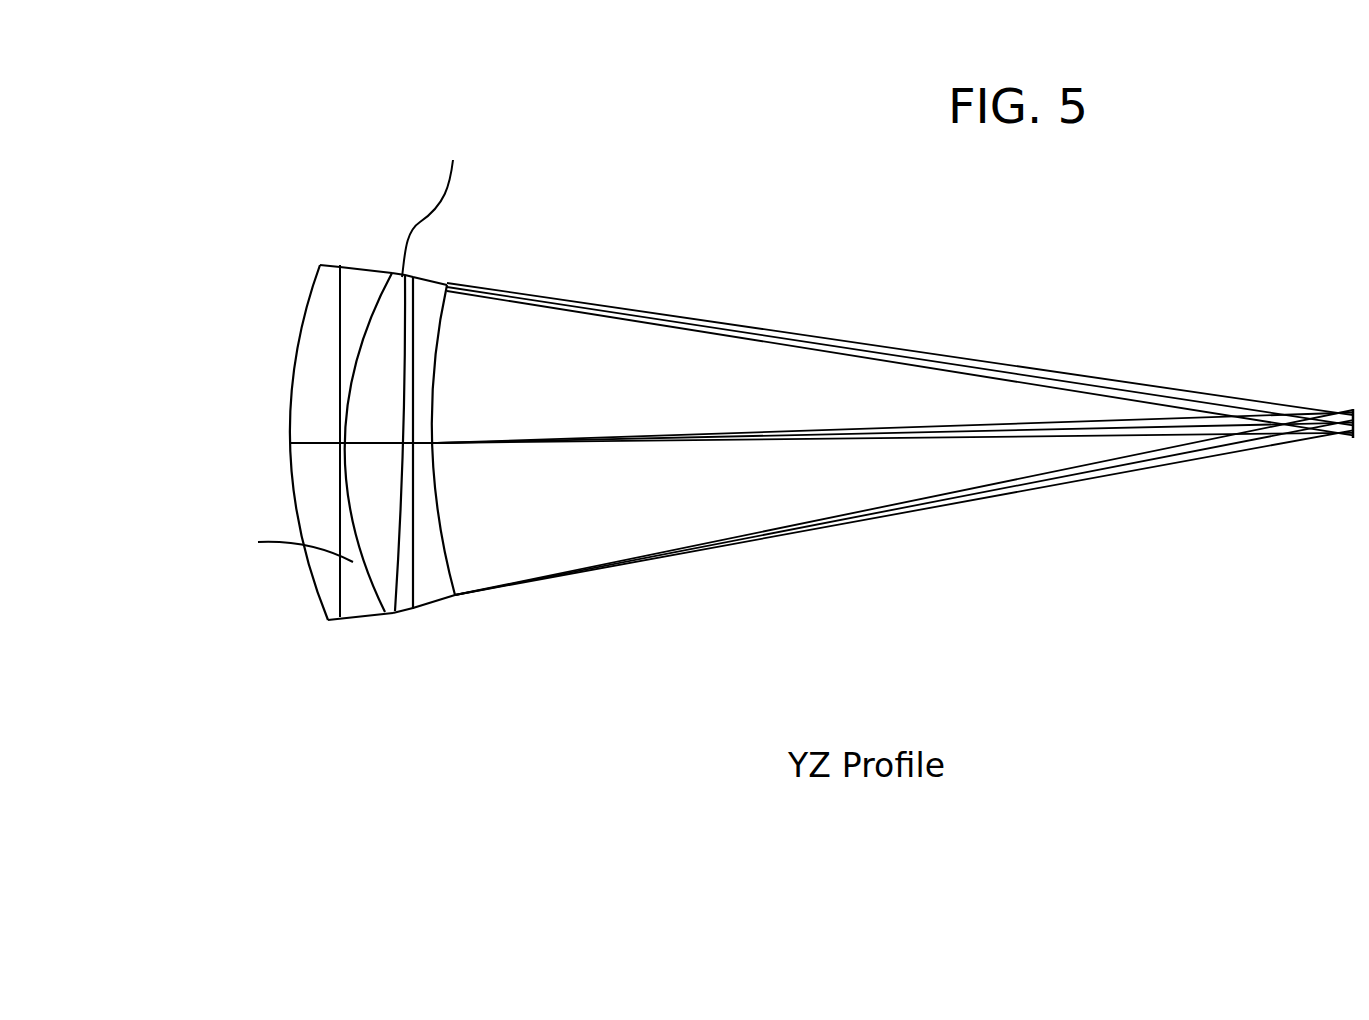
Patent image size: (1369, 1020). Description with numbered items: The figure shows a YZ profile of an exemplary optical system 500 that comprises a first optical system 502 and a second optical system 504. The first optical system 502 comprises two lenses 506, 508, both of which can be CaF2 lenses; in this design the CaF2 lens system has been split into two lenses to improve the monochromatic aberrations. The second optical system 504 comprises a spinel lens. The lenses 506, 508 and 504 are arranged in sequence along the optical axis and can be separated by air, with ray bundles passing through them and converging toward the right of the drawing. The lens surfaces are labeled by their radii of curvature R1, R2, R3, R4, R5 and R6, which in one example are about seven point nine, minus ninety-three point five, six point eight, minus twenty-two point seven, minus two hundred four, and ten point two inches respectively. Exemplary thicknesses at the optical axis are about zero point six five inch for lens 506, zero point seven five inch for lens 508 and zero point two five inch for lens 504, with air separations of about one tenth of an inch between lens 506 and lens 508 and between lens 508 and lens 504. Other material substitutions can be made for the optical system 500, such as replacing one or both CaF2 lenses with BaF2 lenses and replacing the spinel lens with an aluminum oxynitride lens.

The optical system 500 is at (127, 138).
The first optical system 502 is at (393, 258).
The second optical system 504 is at (425, 288).
The lens 506 is at (332, 617).
The lens 508 is at (397, 614).
The radius of curvature of lens surface R1 is at (305, 315).
The radius of curvature of lens surface R2 is at (345, 385).
The radius of curvature of lens surface R3 is at (345, 427).
The radius of curvature of lens surface R4 is at (405, 485).
The radius of curvature of lens surface R5 is at (440, 355).
The radius of curvature of lens surface R6 is at (413, 479).